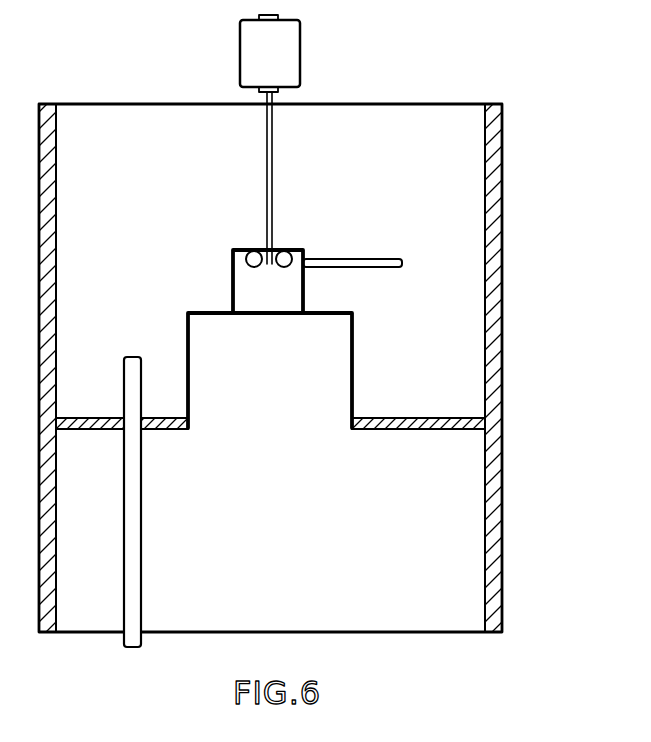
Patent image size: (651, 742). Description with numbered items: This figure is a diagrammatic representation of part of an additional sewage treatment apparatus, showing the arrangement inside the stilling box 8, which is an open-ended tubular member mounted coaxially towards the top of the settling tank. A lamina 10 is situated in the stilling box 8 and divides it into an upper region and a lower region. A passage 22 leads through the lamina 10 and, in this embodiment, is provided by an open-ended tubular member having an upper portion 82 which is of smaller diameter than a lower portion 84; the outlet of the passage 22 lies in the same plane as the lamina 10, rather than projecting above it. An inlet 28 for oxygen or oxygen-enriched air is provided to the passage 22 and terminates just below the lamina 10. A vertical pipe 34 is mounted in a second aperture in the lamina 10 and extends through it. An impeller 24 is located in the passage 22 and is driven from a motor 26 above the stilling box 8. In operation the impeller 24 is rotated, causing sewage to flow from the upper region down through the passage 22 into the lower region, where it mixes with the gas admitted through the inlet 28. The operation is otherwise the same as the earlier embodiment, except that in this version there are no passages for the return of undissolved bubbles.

The stilling box 8 is at (504, 603).
The lamina 10 is at (91, 417).
The passage 22 is at (271, 388).
The impeller 24 is at (290, 250).
The motor 26 is at (287, 52).
The inlet 28 is at (372, 257).
The vertical pipe 34 is at (133, 503).
The upper portion 82 is at (231, 298).
The lower portion 84 is at (335, 381).